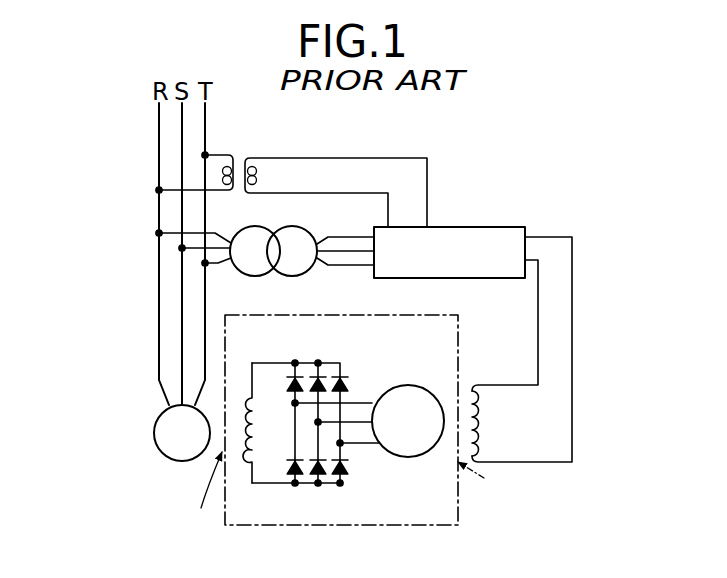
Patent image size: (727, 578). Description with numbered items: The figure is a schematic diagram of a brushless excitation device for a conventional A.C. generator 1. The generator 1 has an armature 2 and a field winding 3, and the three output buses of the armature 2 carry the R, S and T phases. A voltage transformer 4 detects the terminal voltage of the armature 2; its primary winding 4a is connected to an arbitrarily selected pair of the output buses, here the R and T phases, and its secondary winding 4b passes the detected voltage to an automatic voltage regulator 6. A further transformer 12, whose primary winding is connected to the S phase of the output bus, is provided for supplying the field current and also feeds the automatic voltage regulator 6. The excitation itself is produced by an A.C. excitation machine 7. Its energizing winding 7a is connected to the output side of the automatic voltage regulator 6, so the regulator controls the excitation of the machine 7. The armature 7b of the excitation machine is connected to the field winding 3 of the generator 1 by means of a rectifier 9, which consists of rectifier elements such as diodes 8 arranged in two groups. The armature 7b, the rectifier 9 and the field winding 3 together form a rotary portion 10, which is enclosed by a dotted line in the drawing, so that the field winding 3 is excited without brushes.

The A.C. generator 1 is at (120, 320).
The armature 2 is at (154, 431).
The field winding 3 is at (247, 450).
The voltage transformer 4 is at (269, 171).
The primary winding 4a is at (222, 175).
The secondary winding 4b is at (258, 174).
The automatic voltage regulator 6 is at (493, 227).
The A.C. excitation machine 7 is at (536, 397).
The energizing winding 7a is at (483, 421).
The armature 7b is at (427, 391).
The diodes 8 is at (349, 465).
The rectifier 9 is at (333, 398).
The rotary portion 10 is at (375, 529).
The transformer 12 is at (273, 278).